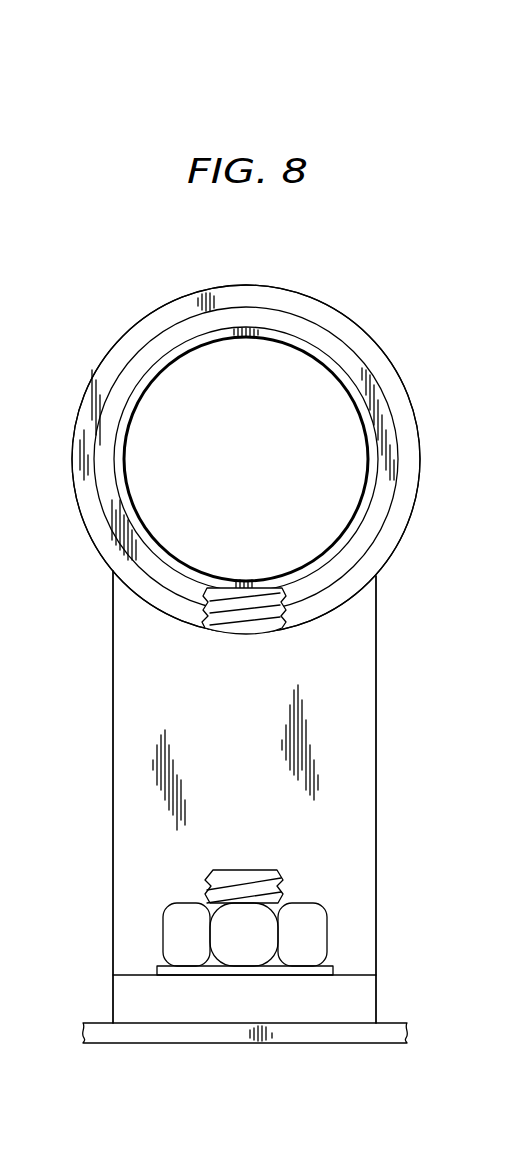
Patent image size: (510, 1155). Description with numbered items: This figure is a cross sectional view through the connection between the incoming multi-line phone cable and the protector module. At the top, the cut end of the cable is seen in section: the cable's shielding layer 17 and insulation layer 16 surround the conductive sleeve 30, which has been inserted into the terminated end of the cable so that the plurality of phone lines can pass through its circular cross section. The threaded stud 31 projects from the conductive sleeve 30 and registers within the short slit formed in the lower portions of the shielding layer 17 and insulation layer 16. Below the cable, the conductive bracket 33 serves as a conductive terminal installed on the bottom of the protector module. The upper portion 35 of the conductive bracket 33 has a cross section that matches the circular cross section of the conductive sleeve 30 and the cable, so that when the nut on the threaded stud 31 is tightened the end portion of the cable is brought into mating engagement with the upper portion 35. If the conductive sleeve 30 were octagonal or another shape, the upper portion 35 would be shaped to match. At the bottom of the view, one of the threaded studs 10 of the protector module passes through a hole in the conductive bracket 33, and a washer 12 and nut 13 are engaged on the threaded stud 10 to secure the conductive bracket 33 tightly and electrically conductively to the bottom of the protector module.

The threaded stud 10 is at (240, 871).
The washer 12 is at (162, 965).
The nut 13 is at (311, 916).
The insulation layer 16 is at (102, 542).
The shielding layer 17 is at (138, 355).
The conductive sleeve 30 is at (130, 403).
The threaded stud 31 is at (240, 612).
The conductive bracket 33 is at (256, 809).
The upper portion 35 is at (172, 674).